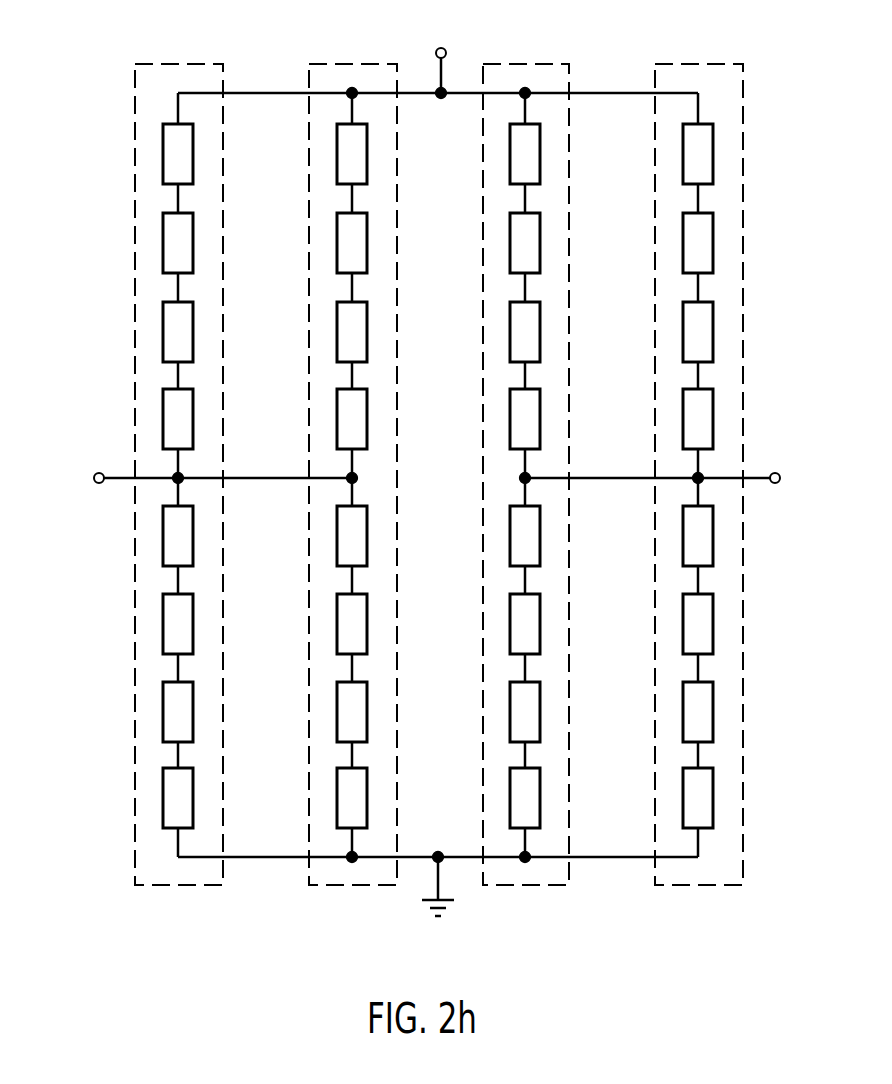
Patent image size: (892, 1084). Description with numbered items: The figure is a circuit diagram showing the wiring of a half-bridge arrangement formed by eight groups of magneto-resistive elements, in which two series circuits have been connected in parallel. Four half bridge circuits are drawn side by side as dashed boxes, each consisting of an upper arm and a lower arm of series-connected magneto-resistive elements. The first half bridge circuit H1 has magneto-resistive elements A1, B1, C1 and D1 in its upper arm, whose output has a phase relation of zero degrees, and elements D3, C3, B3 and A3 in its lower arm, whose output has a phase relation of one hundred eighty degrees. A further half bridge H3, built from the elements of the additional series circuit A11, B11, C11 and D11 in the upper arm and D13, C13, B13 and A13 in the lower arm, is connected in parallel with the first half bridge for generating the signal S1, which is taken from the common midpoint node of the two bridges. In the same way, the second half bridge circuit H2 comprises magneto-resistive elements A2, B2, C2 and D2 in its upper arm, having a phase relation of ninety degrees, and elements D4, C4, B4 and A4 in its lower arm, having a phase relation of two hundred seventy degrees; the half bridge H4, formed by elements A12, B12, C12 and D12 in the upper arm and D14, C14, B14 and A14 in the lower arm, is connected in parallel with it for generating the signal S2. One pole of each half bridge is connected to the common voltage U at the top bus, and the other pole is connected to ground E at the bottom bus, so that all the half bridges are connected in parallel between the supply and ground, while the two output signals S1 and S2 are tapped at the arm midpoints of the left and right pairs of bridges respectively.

The voltage U is at (441, 49).
The ground E is at (438, 907).
The signal S1 is at (206, 477).
The signal S2 is at (675, 477).
The first half bridge circuit H1 is at (177, 872).
The second half bridge circuit H2 is at (703, 872).
The further half bridge H3 is at (355, 872).
The half bridge H4 is at (533, 872).
The magneto-resistive element A1 is at (178, 154).
The magneto-resistive element B1 is at (178, 243).
The magneto-resistive element C1 is at (178, 332).
The magneto-resistive element D1 is at (178, 419).
The magneto-resistive element D3 is at (178, 536).
The magneto-resistive element C3 is at (178, 624).
The magneto-resistive element B3 is at (178, 712).
The magneto-resistive element A3 is at (178, 798).
The magneto-resistive element A11 is at (352, 154).
The magneto-resistive element B11 is at (352, 243).
The magneto-resistive element C11 is at (352, 332).
The magneto-resistive element D11 is at (352, 419).
The magneto-resistive element D13 is at (352, 536).
The magneto-resistive element C13 is at (352, 624).
The magneto-resistive element B13 is at (352, 712).
The magneto-resistive element A13 is at (352, 798).
The magneto-resistive element A12 is at (525, 154).
The magneto-resistive element B12 is at (525, 243).
The magneto-resistive element C12 is at (525, 332).
The magneto-resistive element D12 is at (525, 419).
The magneto-resistive element D14 is at (525, 536).
The magneto-resistive element C14 is at (525, 624).
The magneto-resistive element B14 is at (525, 712).
The magneto-resistive element A14 is at (525, 798).
The magneto-resistive element A2 is at (698, 154).
The magneto-resistive element B2 is at (698, 243).
The magneto-resistive element C2 is at (698, 332).
The magneto-resistive element D2 is at (698, 419).
The magneto-resistive element D4 is at (698, 536).
The magneto-resistive element C4 is at (698, 624).
The magneto-resistive element B4 is at (698, 712).
The magneto-resistive element A4 is at (698, 798).